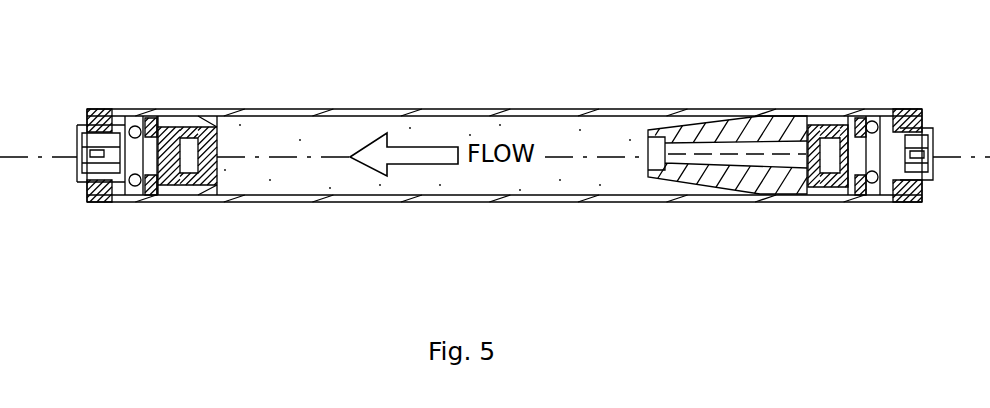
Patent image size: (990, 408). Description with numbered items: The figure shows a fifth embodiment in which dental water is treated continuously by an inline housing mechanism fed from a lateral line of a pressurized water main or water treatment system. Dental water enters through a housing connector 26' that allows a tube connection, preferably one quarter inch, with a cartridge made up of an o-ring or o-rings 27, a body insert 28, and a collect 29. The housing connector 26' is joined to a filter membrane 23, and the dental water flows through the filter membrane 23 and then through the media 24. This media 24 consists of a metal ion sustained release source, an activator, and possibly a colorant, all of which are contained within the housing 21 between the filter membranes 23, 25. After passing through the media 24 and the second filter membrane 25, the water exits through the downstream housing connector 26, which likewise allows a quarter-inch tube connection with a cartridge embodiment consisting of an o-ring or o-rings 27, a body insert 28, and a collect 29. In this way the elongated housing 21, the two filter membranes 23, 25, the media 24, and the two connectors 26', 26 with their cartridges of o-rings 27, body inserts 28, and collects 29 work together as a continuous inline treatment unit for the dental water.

The housing 21 is at (596, 104).
The filter membrane 23 is at (762, 184).
The media 24 is at (582, 176).
The filter membrane 25 is at (197, 187).
The downstream housing connector 26 is at (107, 214).
The housing connector 26' is at (902, 209).
The o-ring 27 is at (142, 126).
The body insert 28 is at (102, 128).
The collect 29 is at (78, 128).